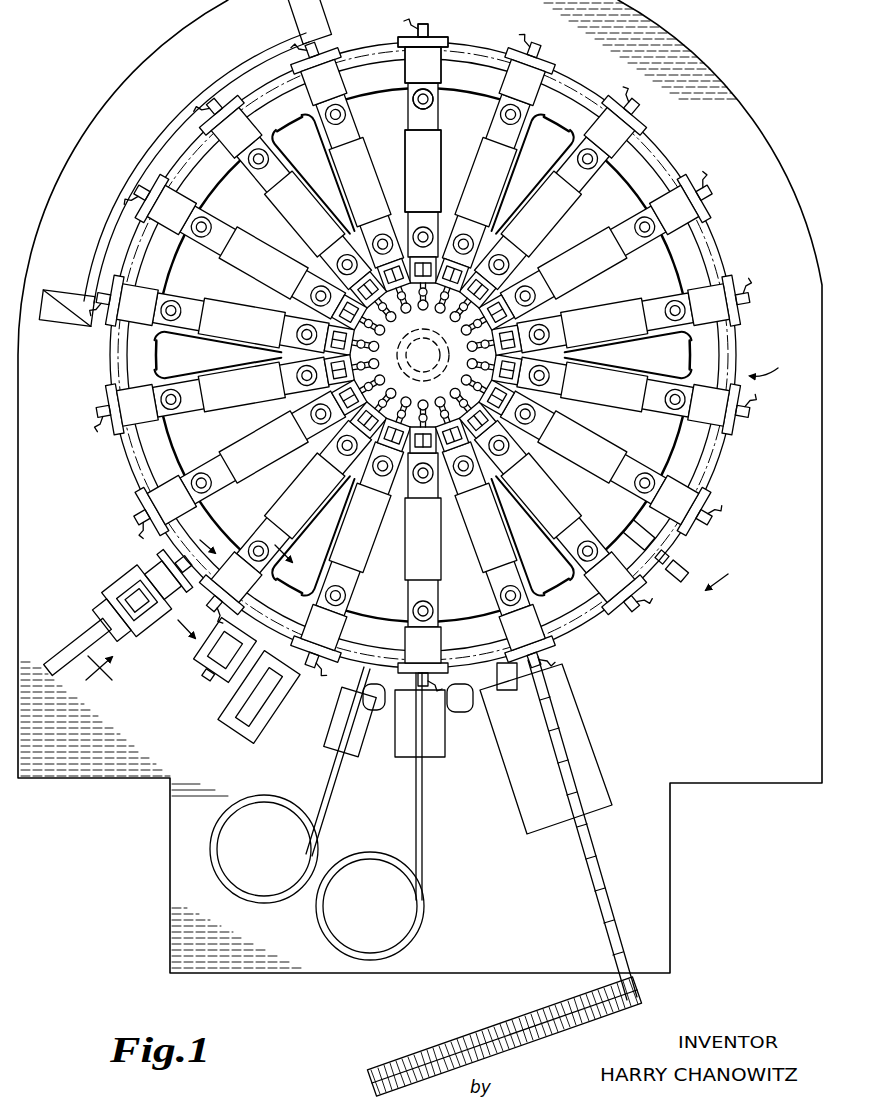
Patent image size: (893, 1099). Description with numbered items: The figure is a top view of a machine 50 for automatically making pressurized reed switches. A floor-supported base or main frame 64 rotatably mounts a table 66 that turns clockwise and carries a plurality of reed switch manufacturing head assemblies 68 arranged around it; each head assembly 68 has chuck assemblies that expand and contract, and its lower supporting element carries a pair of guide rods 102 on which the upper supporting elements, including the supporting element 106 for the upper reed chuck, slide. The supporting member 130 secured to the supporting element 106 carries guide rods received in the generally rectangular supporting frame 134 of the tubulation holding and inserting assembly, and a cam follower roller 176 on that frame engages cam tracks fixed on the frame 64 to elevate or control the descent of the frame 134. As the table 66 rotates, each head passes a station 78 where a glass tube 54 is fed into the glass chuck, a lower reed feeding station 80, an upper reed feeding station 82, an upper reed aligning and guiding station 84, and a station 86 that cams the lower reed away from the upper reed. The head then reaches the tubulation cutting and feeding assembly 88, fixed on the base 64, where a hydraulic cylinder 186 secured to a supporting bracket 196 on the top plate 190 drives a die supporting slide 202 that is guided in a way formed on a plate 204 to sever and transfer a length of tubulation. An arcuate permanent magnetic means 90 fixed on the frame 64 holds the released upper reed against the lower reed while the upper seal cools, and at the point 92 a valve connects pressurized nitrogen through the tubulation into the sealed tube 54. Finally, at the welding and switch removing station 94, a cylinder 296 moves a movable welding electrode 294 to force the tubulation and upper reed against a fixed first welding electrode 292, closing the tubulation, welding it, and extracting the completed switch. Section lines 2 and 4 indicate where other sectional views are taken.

The section line 2- 2 is at (242, 597).
The section line 4- 4 is at (152, 608).
The machine 50 is at (728, 40).
The glass housing or tube 54 is at (582, 866).
The base or main frame 64 is at (768, 166).
The table 66 is at (640, 168).
The reed switch manufacturing head assemblies 68 is at (700, 287).
The glass tube feeding station 78 is at (612, 754).
The lower reed feeding station 80 is at (455, 750).
The upper reed feeding station 82 is at (368, 752).
The upper reed aligning and guiding station 84 is at (280, 728).
The camming station 86 is at (214, 700).
The tubulation cutting and feeding assembly 88 is at (114, 609).
The arcuate permanent magnetic means 90 is at (98, 216).
The pressurizing point 92 is at (786, 364).
The welding and switch removing station 94 is at (727, 570).
The guide rods 102 is at (410, 100).
The supporting element 106 is at (416, 118).
The supporting member 130 is at (402, 62).
The supporting frame 134 is at (446, 40).
The cam follower roller 176 is at (422, 24).
The hydraulic cylinder 186 is at (67, 632).
The top plate 190 is at (137, 601).
The supporting bracket 196 is at (111, 620).
The die supporting slide 202 is at (137, 601).
The plate 204 is at (155, 563).
The first welding electrode 292 is at (680, 583).
The movable welding electrode 294 is at (663, 566).
The cylinder 296 is at (642, 526).